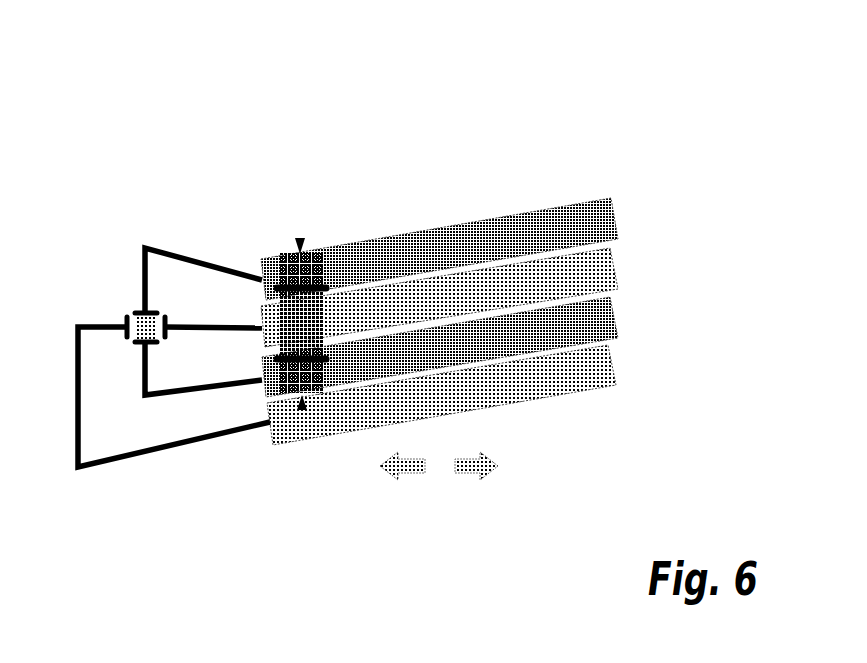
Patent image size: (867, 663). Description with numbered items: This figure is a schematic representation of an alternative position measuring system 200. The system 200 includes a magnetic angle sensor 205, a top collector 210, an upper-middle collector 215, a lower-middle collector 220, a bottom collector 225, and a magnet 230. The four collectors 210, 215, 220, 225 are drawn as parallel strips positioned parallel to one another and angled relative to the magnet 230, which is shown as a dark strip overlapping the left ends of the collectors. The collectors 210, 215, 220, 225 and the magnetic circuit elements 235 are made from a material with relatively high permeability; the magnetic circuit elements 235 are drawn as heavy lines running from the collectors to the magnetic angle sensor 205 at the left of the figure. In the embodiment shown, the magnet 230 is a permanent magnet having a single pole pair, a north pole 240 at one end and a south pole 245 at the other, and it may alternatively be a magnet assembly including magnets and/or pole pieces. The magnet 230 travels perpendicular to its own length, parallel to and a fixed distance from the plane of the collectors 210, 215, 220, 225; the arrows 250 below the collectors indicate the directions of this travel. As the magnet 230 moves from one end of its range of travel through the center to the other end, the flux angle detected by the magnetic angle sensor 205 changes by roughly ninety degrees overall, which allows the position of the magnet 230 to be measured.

The position measuring system 200 is at (363, 58).
The magnetic angle sensor 205 is at (135, 308).
The top collector 210 is at (620, 217).
The upper-middle collector 215 is at (620, 262).
The lower-middle collector 220 is at (620, 320).
The bottom collector 225 is at (620, 367).
The magnet 230 is at (333, 267).
The magnetic circuit elements 235 is at (220, 325).
The north pole 240 is at (299, 238).
The south pole 245 is at (301, 411).
The arrows 250 is at (413, 478).